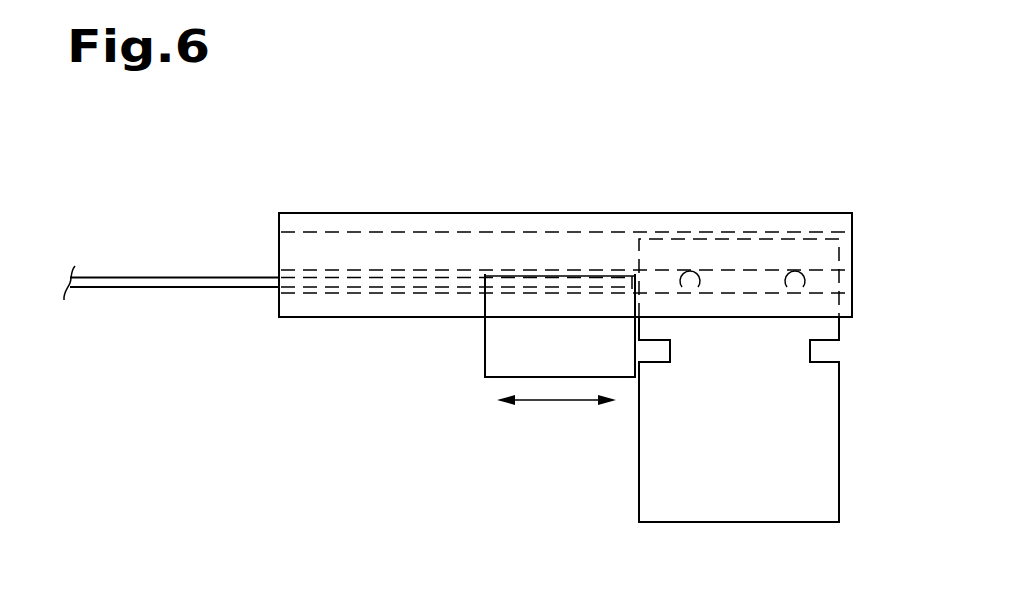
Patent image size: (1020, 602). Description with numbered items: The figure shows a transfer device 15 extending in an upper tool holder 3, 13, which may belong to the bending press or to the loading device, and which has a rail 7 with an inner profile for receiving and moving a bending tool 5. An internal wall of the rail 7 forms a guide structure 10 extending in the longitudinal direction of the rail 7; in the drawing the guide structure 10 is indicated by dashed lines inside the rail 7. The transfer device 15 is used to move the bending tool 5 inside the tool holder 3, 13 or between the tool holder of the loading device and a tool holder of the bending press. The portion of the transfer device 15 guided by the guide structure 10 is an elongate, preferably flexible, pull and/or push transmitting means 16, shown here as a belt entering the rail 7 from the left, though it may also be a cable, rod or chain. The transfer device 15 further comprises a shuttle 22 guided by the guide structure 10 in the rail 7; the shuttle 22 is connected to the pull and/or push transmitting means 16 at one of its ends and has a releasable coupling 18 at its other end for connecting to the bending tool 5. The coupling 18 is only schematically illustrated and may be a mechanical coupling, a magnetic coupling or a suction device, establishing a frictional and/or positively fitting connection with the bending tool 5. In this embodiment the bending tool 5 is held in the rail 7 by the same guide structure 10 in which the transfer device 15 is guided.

The tool holder 3 is at (554, 299).
The tool holder 13 is at (554, 299).
The transfer device 15 is at (352, 356).
The rail 7 is at (469, 232).
The guide structure 10 is at (341, 269).
The pull and/or push transmitting means 16 is at (175, 287).
The shuttle 22 is at (568, 356).
The bending tool 5 is at (742, 434).
The coupling 18 is at (653, 362).